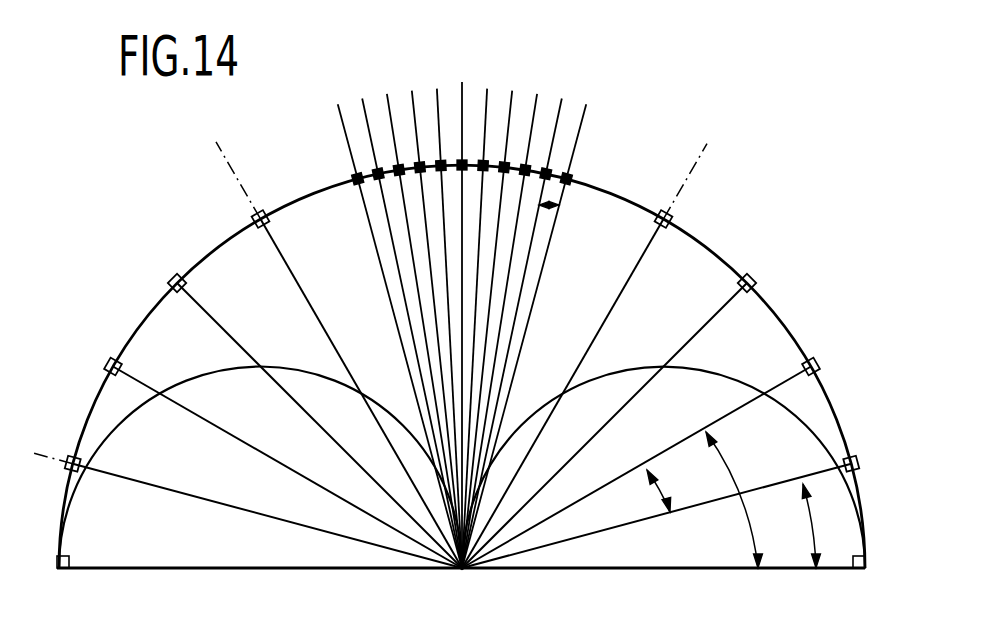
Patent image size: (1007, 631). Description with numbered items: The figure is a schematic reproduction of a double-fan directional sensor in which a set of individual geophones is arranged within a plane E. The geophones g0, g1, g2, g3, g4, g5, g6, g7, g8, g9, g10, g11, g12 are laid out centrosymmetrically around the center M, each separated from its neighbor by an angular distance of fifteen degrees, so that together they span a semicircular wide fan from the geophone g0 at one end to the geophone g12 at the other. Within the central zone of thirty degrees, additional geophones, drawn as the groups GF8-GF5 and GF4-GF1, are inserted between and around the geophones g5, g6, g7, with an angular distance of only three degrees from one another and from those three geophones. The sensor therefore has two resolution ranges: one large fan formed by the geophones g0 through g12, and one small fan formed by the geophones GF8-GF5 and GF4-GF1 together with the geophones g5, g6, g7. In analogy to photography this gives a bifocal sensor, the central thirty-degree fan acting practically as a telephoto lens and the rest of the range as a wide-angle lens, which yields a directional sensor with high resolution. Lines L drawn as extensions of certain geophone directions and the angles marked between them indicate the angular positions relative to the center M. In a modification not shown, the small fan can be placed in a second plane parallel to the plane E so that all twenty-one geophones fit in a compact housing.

The geophone g0 is at (858, 574).
The geophone g1 is at (846, 462).
The geophone g2 is at (808, 366).
The geophone g3 is at (754, 268).
The geophone g4 is at (668, 218).
The geophone g5 is at (570, 181).
The geophone g6 is at (468, 168).
The geophone g7 is at (356, 177).
The geophone g8 is at (260, 215).
The geophone g9 is at (172, 285).
The geophone g10 is at (115, 366).
The geophone g11 is at (74, 458).
The geophone g12 is at (62, 572).
The extension line (dash-dot) L is at (226, 148).
The plane E is at (614, 212).
The center M is at (463, 570).
The geophones GF8-GF5 is at (455, 82).
The geophones GF4-GF1 is at (612, 82).